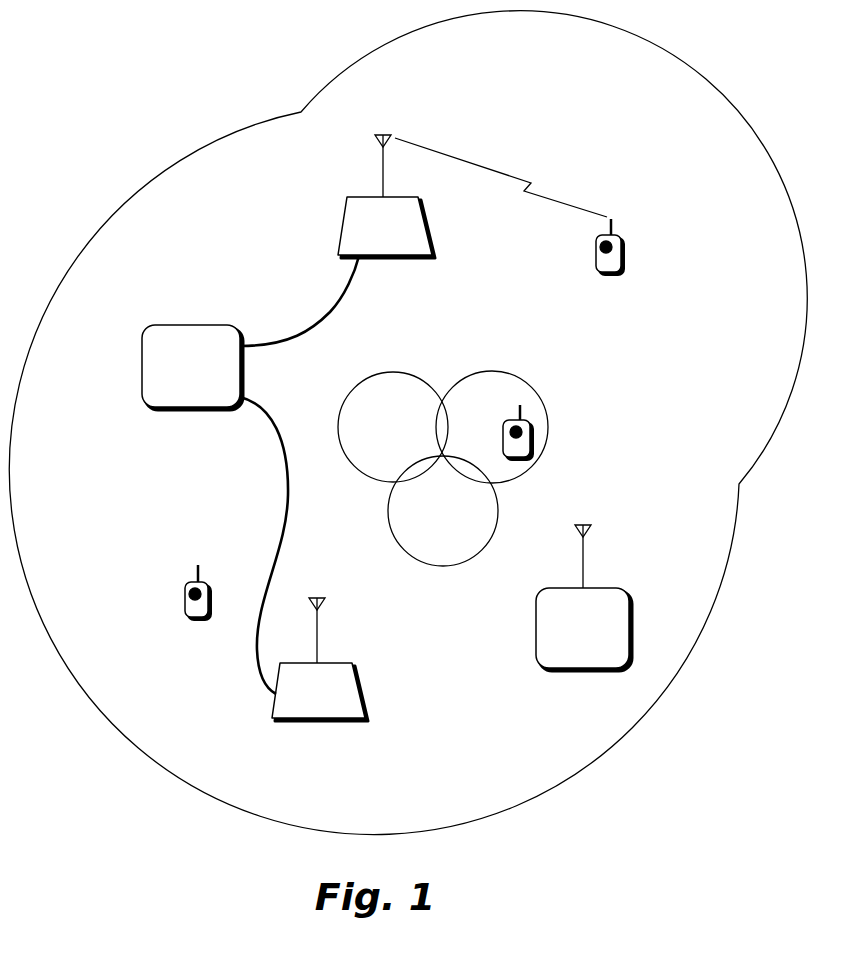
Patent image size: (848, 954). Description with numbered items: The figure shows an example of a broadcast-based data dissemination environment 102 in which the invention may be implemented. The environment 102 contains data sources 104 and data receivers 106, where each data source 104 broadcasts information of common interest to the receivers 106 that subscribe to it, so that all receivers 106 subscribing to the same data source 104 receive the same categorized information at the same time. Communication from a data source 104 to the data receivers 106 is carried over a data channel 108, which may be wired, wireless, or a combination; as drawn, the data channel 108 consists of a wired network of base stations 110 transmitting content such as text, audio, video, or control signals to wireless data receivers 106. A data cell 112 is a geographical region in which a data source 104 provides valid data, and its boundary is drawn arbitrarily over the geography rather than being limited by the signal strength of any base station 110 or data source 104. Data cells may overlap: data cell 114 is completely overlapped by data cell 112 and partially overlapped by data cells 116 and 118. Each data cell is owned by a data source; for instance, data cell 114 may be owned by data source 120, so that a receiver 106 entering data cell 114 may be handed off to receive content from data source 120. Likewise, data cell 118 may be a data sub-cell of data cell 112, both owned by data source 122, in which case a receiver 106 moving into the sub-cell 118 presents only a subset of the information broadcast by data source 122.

The broadcast-based data dissemination environment 102 is at (258, 60).
The data source 104 is at (347, 532).
The data receiver 106 is at (622, 250).
The data channel 108 is at (498, 171).
The base station 110 is at (400, 258).
The data cell 112 is at (712, 361).
The data cell 114 is at (408, 435).
The data cell 116 is at (455, 519).
The data cell 118 is at (495, 414).
The data source 120 is at (536, 640).
The data source 122 is at (180, 410).